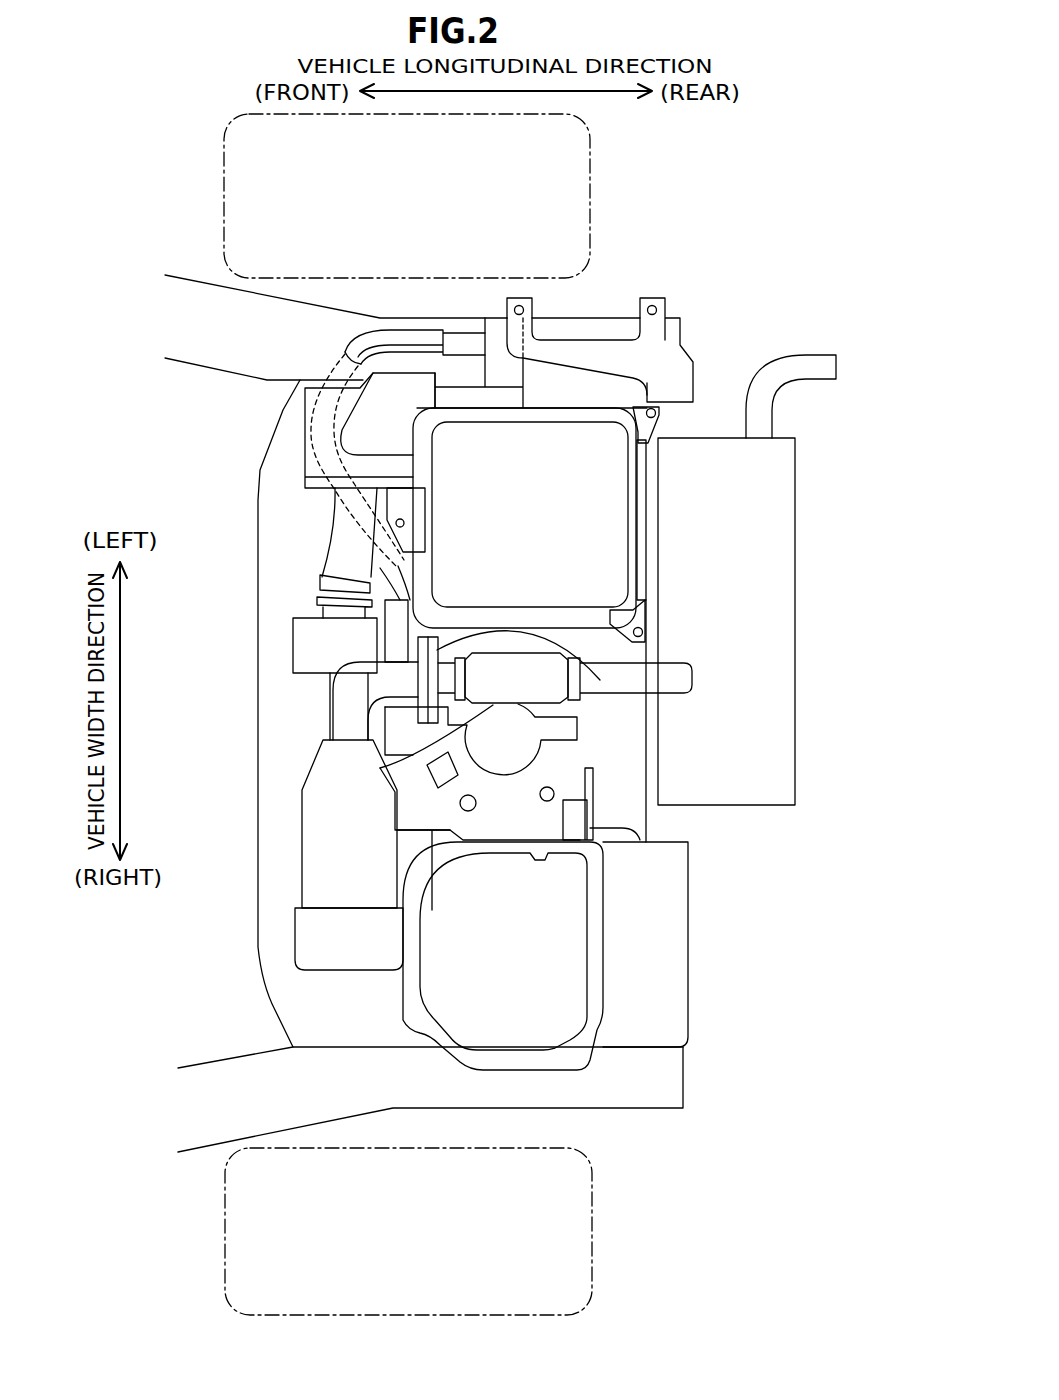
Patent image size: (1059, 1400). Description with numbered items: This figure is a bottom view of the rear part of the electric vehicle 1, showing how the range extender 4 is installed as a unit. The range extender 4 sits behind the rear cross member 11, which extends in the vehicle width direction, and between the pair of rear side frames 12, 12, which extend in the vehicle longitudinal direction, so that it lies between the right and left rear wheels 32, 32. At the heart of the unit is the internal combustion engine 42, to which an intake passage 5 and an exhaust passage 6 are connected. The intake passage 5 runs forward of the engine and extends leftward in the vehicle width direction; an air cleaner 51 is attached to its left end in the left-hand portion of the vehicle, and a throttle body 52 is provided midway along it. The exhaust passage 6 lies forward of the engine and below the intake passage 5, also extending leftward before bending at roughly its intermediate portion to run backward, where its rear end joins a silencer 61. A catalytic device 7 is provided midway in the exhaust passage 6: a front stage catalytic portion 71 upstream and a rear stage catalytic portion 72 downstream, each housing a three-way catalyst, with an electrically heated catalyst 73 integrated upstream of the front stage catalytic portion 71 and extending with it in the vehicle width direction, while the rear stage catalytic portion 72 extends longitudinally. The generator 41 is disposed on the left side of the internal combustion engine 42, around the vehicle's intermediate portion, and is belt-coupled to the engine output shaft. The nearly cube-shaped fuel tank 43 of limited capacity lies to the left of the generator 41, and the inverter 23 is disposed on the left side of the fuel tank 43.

The electric vehicle 1 is at (722, 233).
The range extender 4 is at (714, 926).
The intake passage 5 is at (305, 573).
The exhaust passage 6 is at (317, 719).
The catalytic device 7 is at (178, 742).
The rear cross member 11 is at (260, 1030).
The rear side frame 12 is at (263, 293).
The inverter 23 is at (618, 330).
The rear wheel 32 is at (224, 192).
The generator 41 is at (568, 801).
The internal combustion engine 42 is at (552, 1040).
The fuel tank 43 is at (560, 463).
The air cleaner 51 is at (307, 420).
The throttle body 52 is at (308, 648).
The silencer 61 is at (795, 616).
The front stage catalytic portion 71 is at (323, 830).
The rear stage catalytic portion 72 is at (445, 763).
The electrically heated catalyst 73 is at (295, 928).